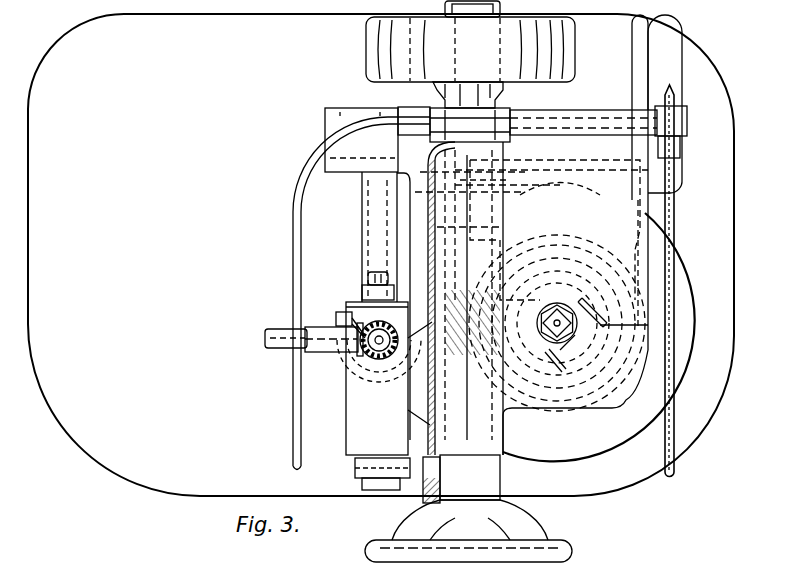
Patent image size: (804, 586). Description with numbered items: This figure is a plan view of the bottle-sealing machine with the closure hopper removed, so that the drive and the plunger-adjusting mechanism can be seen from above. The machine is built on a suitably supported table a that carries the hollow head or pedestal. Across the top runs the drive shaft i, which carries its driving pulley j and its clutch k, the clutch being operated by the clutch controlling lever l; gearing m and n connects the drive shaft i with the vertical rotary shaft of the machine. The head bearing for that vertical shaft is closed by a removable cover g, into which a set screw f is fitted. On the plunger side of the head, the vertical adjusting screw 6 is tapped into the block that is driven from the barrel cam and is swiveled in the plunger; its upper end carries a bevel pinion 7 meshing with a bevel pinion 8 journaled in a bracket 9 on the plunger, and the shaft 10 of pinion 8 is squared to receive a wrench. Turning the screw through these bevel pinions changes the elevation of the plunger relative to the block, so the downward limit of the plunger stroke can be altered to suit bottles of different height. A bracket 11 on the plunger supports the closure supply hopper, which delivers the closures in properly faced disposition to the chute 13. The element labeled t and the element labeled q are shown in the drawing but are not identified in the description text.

The table a is at (381, 255).
The driving pulley j is at (575, 63).
The clutch k is at (506, 127).
The central tube t is at (468, 352).
The clutch controlling lever l is at (293, 420).
The removable cover g is at (563, 235).
The spring rod q is at (599, 281).
The set screw f is at (555, 323).
The gearing m is at (553, 311).
The gearing n is at (575, 262).
The drive shaft i is at (505, 250).
The bracket 11 is at (346, 437).
The vertical adjusting screw 6 is at (386, 355).
The bevel pinion 7 is at (376, 323).
The bevel pinion 8 is at (360, 348).
The bracket 9 is at (320, 352).
The shaft 10 is at (284, 354).
The chute 13 is at (378, 490).